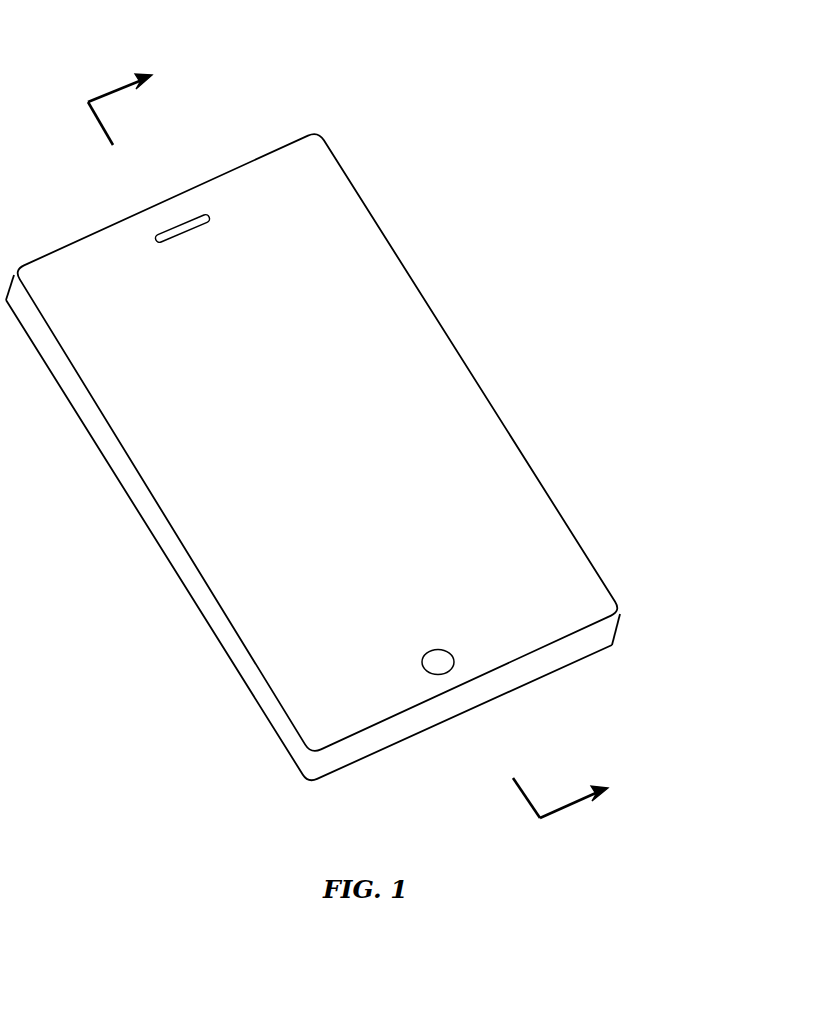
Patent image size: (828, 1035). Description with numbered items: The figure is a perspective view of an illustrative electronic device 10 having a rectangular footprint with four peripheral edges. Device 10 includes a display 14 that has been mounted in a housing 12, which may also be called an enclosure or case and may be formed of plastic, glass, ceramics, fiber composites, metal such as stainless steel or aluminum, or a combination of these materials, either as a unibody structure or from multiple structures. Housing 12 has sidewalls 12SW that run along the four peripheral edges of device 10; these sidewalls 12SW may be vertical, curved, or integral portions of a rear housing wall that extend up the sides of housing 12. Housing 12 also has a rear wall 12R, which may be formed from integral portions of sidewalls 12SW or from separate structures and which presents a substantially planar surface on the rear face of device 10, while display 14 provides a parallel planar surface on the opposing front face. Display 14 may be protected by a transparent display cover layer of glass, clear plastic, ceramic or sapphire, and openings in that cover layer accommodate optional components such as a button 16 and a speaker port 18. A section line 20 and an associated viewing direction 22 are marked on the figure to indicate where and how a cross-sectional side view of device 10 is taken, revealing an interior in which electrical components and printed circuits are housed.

The electronic device 10 is at (373, 474).
The housing 12 is at (313, 559).
The sidewalls 12SW is at (263, 700).
The rear wall 12R is at (375, 768).
The display 14 is at (473, 412).
The button 16 is at (212, 218).
The speaker port 18 is at (454, 660).
The line 20 is at (97, 125).
The direction 22 is at (120, 88).